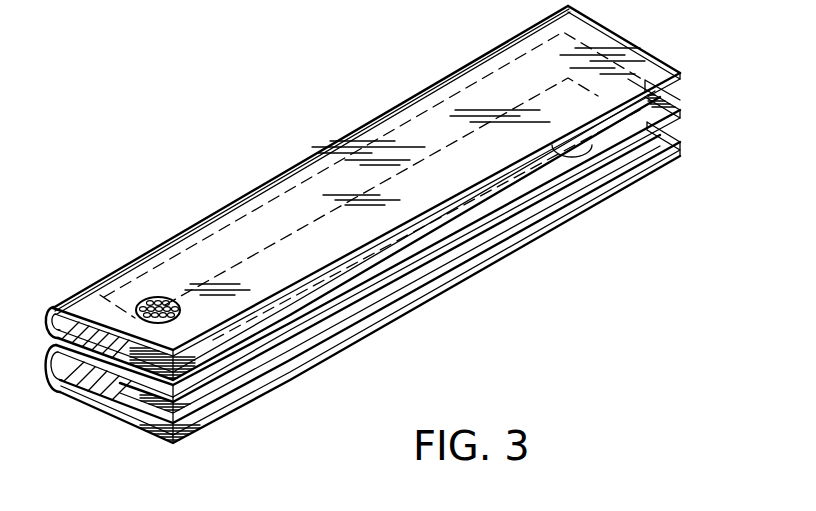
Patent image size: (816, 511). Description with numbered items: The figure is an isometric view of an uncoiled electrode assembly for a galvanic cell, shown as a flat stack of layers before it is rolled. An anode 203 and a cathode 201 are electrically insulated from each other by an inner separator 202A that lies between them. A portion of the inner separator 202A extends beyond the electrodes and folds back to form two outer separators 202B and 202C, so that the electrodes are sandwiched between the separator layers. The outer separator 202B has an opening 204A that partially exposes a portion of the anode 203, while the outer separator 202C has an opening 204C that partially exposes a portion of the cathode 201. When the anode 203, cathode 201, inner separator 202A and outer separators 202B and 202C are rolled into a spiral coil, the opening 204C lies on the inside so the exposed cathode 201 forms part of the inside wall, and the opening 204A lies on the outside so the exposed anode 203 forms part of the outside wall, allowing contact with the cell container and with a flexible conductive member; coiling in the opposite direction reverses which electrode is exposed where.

The cathode 201 is at (157, 297).
The inner separator 202A is at (128, 392).
The outer separator 202B is at (352, 338).
The outer separator 202C is at (305, 197).
The anode 203 is at (286, 357).
The opening 204A is at (580, 190).
The opening 204C is at (92, 322).